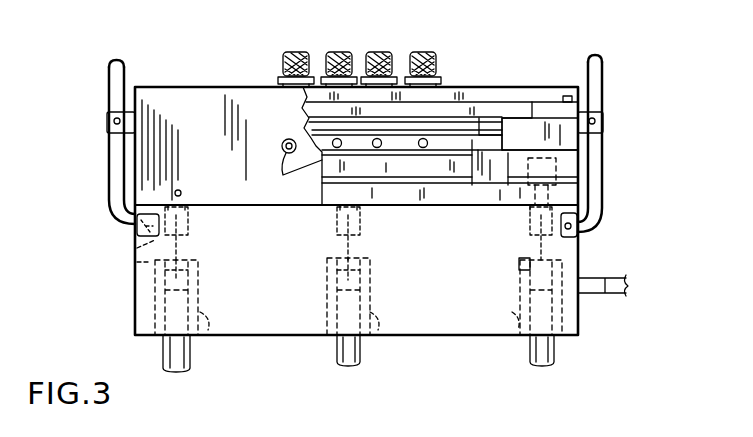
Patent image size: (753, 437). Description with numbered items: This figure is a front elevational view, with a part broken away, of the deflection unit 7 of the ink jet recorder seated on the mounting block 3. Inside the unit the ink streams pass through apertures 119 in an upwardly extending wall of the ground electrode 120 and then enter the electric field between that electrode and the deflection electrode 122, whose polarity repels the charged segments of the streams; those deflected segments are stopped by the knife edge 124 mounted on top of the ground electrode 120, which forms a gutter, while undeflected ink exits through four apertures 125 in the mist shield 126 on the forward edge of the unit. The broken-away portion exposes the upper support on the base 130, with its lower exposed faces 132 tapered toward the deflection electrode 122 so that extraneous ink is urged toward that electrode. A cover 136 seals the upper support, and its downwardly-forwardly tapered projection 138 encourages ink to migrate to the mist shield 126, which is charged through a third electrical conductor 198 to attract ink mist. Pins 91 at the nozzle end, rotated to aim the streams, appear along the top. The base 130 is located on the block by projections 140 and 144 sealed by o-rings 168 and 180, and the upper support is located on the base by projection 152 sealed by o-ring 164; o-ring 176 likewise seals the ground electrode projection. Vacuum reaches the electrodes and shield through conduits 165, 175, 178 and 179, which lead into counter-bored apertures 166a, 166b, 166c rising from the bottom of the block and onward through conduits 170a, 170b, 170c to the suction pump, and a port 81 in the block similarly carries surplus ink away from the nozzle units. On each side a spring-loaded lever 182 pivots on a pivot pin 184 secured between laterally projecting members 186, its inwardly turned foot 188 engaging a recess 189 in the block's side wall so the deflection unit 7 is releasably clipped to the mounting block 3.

The deflection unit 7 is at (168, 87).
The mist shield 126 is at (217, 100).
The pin 91 is at (415, 52).
The downwardly-forwardly tapered projection 138 is at (435, 110).
The cover 136 is at (450, 150).
The knife edge 124 is at (470, 135).
The deflection electrode 122 is at (485, 125).
The lower exposed faces 132 is at (495, 122).
The third electrical conductor 198 is at (567, 90).
The levers 182 is at (112, 92).
The pivot pins 184 is at (108, 125).
The members 186 is at (115, 138).
The o-ring 164 is at (605, 153).
The base 130 is at (605, 168).
The projection 152 is at (605, 180).
The inwardly turned foot 188 is at (130, 230).
The recess 189 is at (137, 245).
The apertures 125 is at (287, 138).
The conduit 178 is at (182, 190).
The apertures 119 is at (322, 156).
The o-ring 176 is at (333, 204).
The ground electrode 120 is at (400, 168).
The o-ring 168 is at (525, 210).
The projection 140 is at (528, 223).
The conduit 165 is at (519, 265).
The conduit 170a is at (520, 292).
The conduit 170b is at (370, 297).
The conduit 170c is at (198, 297).
The projection 144 is at (135, 257).
The o-ring 180 is at (188, 212).
The conduit 179 is at (198, 268).
The conduit 175 is at (372, 268).
The counter-bored aperture 166a is at (505, 334).
The counter-bored aperture 166b is at (384, 337).
The leg 166c is at (211, 325).
The port 81 is at (597, 290).
The mounting block 3 is at (566, 334).